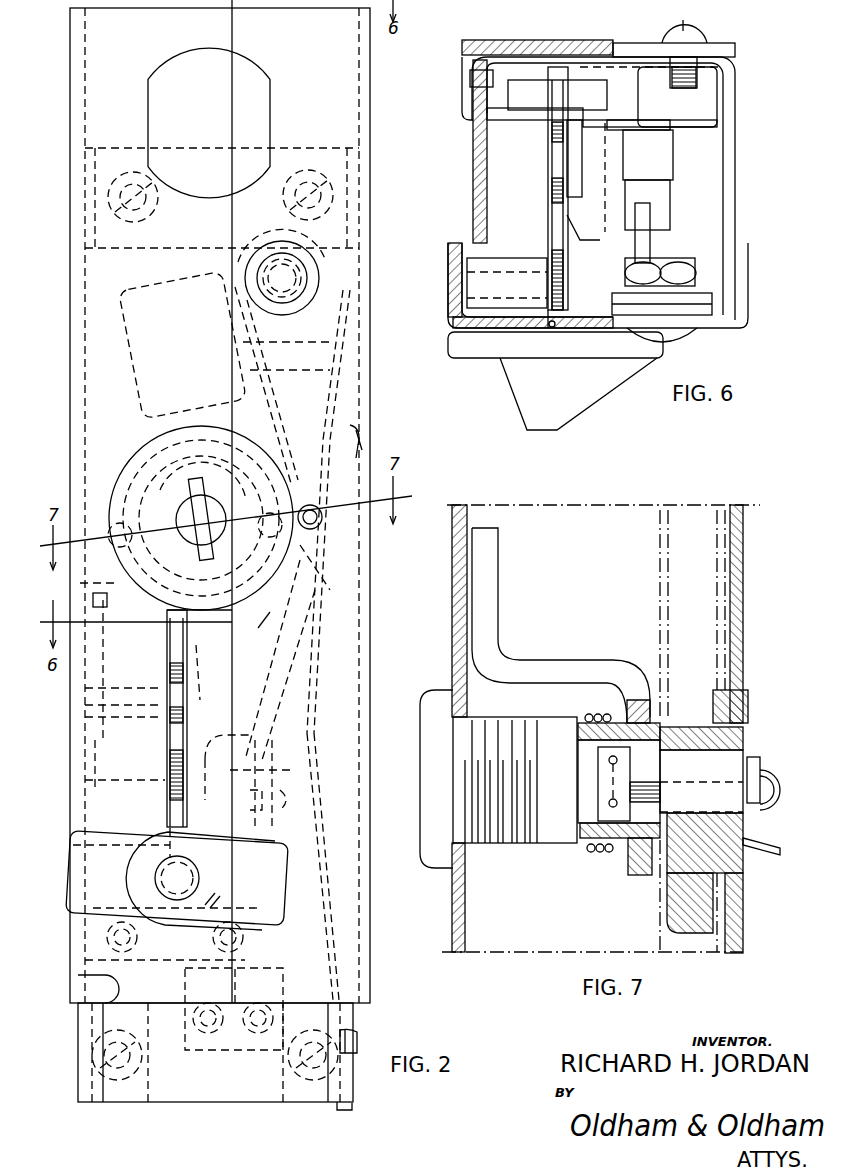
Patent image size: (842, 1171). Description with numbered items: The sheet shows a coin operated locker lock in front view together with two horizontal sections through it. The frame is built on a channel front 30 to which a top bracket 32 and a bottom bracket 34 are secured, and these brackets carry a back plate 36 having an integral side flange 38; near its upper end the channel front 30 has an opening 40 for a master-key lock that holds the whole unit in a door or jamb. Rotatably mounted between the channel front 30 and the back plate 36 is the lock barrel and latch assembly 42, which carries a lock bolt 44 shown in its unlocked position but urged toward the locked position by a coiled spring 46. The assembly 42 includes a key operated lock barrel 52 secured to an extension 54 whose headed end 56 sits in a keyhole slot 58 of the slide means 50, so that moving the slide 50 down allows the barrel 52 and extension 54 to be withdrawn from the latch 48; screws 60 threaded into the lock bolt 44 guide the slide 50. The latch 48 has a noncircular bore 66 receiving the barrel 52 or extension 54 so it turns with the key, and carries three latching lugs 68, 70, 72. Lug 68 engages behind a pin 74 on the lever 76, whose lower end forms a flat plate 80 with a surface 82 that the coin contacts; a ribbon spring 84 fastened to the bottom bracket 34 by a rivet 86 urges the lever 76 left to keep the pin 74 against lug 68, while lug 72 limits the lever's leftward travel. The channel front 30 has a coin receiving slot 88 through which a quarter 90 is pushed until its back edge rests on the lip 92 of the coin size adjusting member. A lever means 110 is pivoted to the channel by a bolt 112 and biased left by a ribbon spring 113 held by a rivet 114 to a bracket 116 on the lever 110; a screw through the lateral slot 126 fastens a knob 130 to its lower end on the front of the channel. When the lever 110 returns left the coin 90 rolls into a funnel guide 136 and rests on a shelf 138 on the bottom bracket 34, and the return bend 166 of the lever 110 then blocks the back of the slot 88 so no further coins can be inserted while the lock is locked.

In FIG. 2, the channel front 30 is at (84, 272).
In FIG. 6, the channel front 30 is at (740, 302).
In FIG. 7, the channel front 30 is at (453, 620).
In FIG. 2, the top bracket 32 is at (283, 150).
In FIG. 2, the bottom bracket 34 is at (188, 1093).
In FIG. 6, the bottom bracket 34 is at (733, 172).
In FIG. 6, the back plate 36 is at (565, 42).
In FIG. 7, the back plate 36 is at (738, 608).
In FIG. 6, the side flange 38 is at (478, 186).
In FIG. 2, the opening 40 is at (150, 92).
In FIG. 2, the lock barrel and latch assembly 42 is at (132, 460).
In FIG. 7, the lock barrel and latch assembly 42 is at (426, 696).
In FIG. 2, the lock bolt 44 is at (125, 358).
In FIG. 7, the lock bolt 44 is at (493, 572).
In FIG. 7, the coiled spring 46 is at (597, 854).
In FIG. 7, the latch 48 is at (684, 722).
In FIG. 7, the slide means 50 is at (773, 854).
In FIG. 7, the lock barrel 52 is at (555, 836).
In FIG. 7, the extension 54 is at (727, 745).
In FIG. 7, the headed end 56 is at (760, 768).
In FIG. 7, the keyhole slot 58 is at (735, 728).
In FIG. 7, the screws 60 is at (772, 812).
In FIG. 7, the noncircular bore 66 is at (620, 710).
In FIG. 2, the latching lug 68 is at (318, 590).
In FIG. 2, the latching lug 70 is at (273, 612).
In FIG. 2, the latching lug 72 is at (196, 648).
In FIG. 2, the pin 74 is at (328, 555).
In FIG. 2, the lever 76 is at (325, 610).
In FIG. 6, the flat plate 80 is at (615, 203).
In FIG. 6, the surface 82 is at (572, 226).
In FIG. 2, the ribbon spring 84 is at (313, 855).
In FIG. 2, the rivet 86 is at (357, 1045).
In FIG. 2, the coin receiving slot 88 is at (178, 636).
In FIG. 6, the coin receiving slot 88 is at (548, 330).
In FIG. 2, the quarter 90 is at (170, 678).
In FIG. 6, the quarter 90 is at (552, 215).
In FIG. 6, the lip 92 is at (528, 118).
In FIG. 2, the lever means 110 is at (330, 352).
In FIG. 6, the lever means 110 is at (698, 312).
In FIG. 2, the bolt 112 is at (293, 305).
In FIG. 6, the bolt 112 is at (680, 272).
In FIG. 2, the ribbon spring 113 is at (362, 445).
In FIG. 2, the rivet 114 is at (250, 798).
In FIG. 2, the bracket 116 is at (256, 757).
In FIG. 2, the lateral slot 126 is at (222, 882).
In FIG. 2, the knob 130 is at (272, 885).
In FIG. 6, the knob 130 is at (520, 400).
In FIG. 2, the funnel guide 136 is at (212, 902).
In FIG. 6, the funnel guide 136 is at (517, 198).
In FIG. 2, the shelf 138 is at (247, 975).
In FIG. 2, the return bend 166 is at (125, 722).